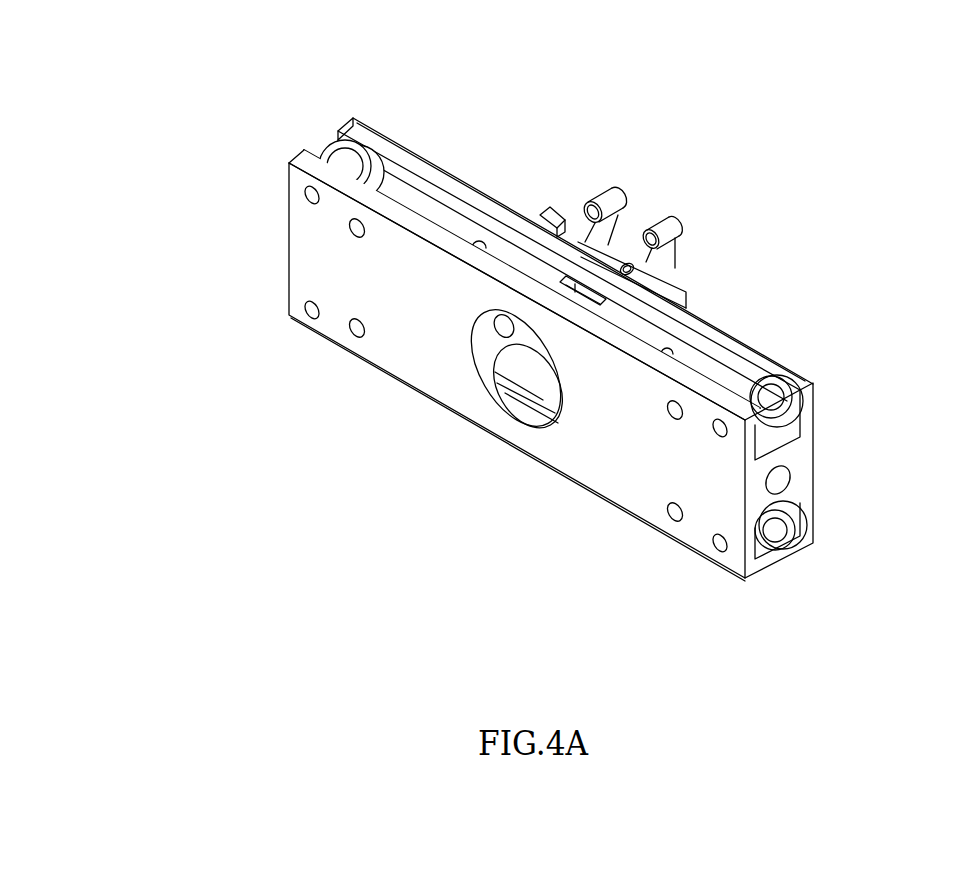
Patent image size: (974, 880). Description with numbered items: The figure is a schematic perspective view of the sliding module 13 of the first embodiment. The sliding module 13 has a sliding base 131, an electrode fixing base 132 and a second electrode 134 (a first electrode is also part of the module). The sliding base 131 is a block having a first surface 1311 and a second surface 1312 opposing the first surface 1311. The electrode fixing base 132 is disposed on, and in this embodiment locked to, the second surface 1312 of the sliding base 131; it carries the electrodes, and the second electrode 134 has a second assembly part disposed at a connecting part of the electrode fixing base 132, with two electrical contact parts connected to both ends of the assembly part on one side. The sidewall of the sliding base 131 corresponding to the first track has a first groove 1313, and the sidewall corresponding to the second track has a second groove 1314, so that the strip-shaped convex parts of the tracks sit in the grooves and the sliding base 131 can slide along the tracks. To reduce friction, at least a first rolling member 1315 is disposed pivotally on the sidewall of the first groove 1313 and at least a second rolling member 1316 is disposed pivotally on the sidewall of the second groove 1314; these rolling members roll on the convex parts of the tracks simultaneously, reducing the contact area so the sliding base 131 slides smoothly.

The sliding module 13 is at (933, 74).
The sliding base 131 is at (305, 362).
The first surface 1311 is at (437, 358).
The second surface 1312 is at (480, 193).
The first groove 1313 is at (797, 515).
The second groove 1314 is at (718, 372).
The first rolling member 1315 is at (773, 542).
The second rolling member 1316 is at (778, 428).
The electrode fixing base 132 is at (683, 312).
The second electrode 134 is at (683, 233).